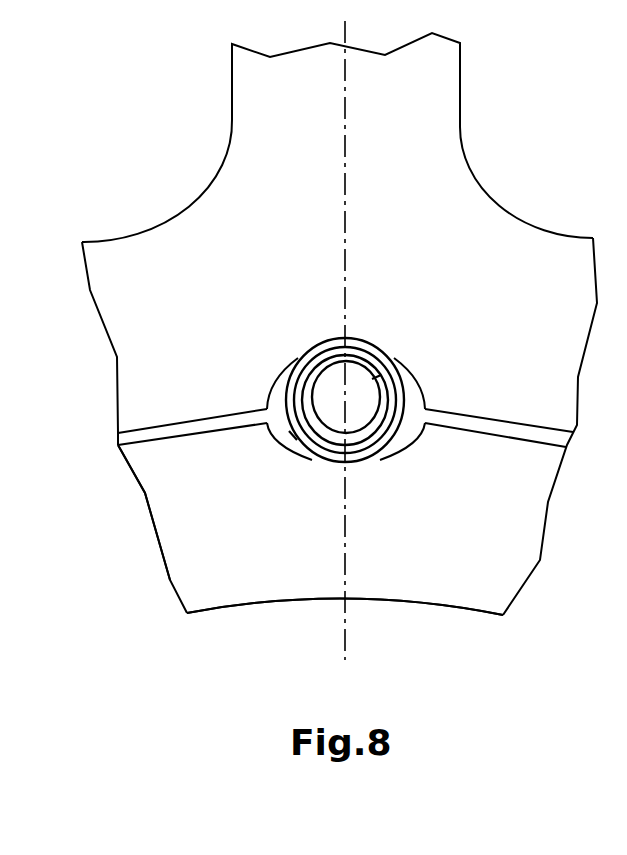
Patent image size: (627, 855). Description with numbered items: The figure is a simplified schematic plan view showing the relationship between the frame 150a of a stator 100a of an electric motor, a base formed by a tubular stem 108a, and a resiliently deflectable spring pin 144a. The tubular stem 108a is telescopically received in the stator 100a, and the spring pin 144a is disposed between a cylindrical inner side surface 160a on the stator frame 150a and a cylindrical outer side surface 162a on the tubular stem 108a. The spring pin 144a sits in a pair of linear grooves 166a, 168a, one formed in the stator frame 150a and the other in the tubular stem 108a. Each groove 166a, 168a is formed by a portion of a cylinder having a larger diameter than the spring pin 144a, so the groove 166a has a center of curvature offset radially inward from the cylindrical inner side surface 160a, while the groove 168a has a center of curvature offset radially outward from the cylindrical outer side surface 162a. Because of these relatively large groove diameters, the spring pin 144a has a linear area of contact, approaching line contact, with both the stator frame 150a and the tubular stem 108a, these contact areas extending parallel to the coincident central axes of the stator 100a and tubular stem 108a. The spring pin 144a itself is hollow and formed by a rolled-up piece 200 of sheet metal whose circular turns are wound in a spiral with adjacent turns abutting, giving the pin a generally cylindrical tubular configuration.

The stator 100a is at (488, 183).
The frame 150a is at (235, 165).
The spring pin 144a is at (335, 334).
The linear groove 166a is at (280, 375).
The linear groove 168a is at (293, 433).
The rolled-up piece of sheet metal 200 is at (393, 387).
The cylindrical inner side surface 160a is at (122, 528).
The cylindrical outer side surface 162a is at (118, 512).
The tubular stem 108a is at (440, 558).